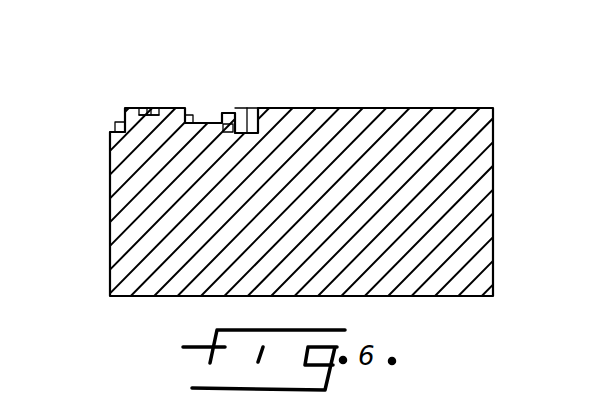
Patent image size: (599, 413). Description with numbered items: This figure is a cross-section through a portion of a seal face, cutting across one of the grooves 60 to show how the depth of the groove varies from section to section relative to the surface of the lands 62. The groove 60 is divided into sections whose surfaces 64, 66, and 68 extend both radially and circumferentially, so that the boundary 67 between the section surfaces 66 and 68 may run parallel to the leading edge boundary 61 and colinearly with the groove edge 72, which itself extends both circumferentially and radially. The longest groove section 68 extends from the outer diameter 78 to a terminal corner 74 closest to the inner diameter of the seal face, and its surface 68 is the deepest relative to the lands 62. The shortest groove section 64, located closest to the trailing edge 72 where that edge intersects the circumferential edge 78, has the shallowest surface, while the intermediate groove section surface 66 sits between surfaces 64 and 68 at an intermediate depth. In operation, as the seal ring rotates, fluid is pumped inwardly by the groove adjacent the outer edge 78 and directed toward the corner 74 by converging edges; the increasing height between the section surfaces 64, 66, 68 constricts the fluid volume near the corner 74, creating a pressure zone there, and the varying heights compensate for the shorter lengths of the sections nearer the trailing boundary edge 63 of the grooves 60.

The groove 60 is at (285, 63).
The leading edge boundary 61 is at (253, 107).
The lands 62 is at (153, 106).
The trailing boundary edge 63 is at (190, 124).
The shortest groove section surface 64 is at (143, 106).
The intermediate groove section surface 66 is at (118, 121).
The boundary 67 is at (222, 107).
The longest groove section surface 68 is at (110, 132).
The trailing edge 72 is at (243, 107).
The terminal corner 74 is at (150, 105).
The outer diameter 78 is at (110, 222).